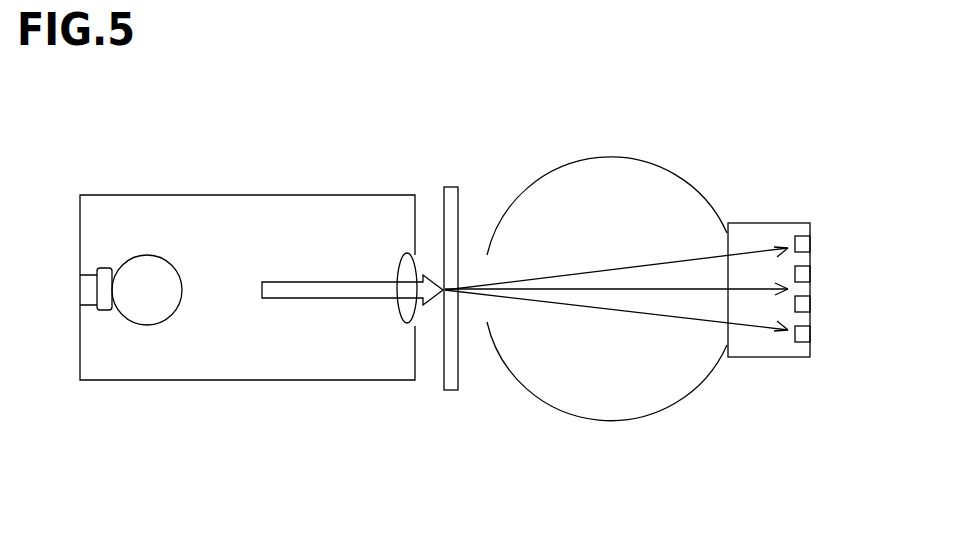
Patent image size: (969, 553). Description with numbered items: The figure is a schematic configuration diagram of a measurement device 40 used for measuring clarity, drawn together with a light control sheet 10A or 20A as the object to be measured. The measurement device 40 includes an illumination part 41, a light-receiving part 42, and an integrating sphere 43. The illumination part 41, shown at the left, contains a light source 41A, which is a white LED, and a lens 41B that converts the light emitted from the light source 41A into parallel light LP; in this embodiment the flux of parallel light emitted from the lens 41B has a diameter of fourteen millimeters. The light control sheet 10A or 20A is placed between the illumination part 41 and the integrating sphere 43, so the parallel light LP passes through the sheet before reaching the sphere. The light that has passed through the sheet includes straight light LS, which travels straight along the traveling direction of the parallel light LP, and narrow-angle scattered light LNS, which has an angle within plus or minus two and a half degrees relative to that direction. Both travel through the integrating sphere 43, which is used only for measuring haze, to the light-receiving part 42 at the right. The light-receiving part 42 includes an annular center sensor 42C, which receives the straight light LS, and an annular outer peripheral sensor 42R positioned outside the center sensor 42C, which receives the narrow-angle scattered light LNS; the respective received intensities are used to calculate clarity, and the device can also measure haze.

The measurement device 40 is at (738, 142).
The illumination part 41 is at (250, 193).
The light source 41A is at (142, 326).
The lens 41B is at (397, 311).
The parallel light LP is at (421, 277).
The light control sheet 10A is at (477, 312).
The light control sheet 20A is at (450, 393).
The integrating sphere 43 is at (613, 415).
The narrow-angle scattered light LNS is at (622, 267).
The straight light LS is at (668, 288).
The light-receiving part 42 is at (770, 222).
The outer peripheral sensor 42R is at (811, 244).
The center sensor 42C is at (812, 273).